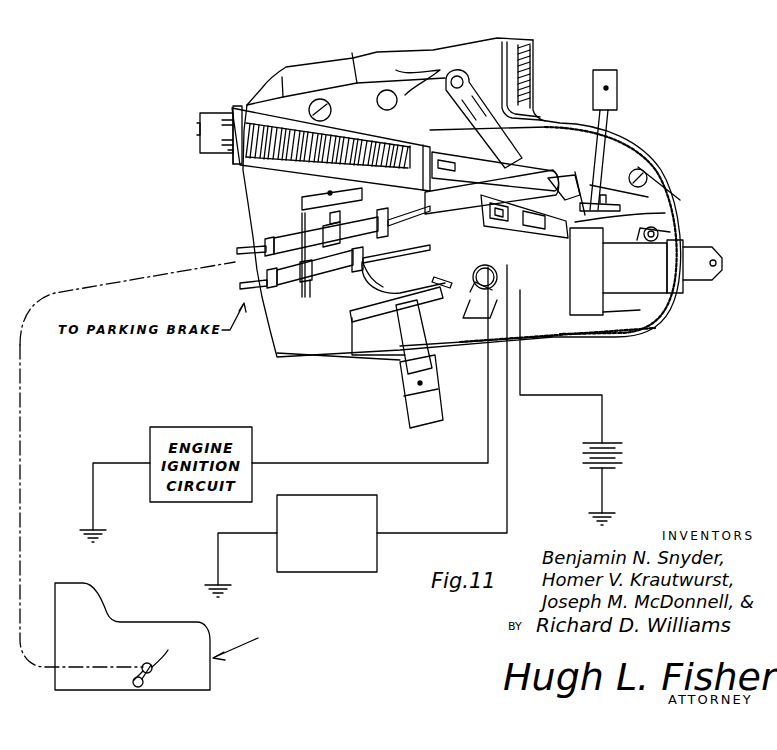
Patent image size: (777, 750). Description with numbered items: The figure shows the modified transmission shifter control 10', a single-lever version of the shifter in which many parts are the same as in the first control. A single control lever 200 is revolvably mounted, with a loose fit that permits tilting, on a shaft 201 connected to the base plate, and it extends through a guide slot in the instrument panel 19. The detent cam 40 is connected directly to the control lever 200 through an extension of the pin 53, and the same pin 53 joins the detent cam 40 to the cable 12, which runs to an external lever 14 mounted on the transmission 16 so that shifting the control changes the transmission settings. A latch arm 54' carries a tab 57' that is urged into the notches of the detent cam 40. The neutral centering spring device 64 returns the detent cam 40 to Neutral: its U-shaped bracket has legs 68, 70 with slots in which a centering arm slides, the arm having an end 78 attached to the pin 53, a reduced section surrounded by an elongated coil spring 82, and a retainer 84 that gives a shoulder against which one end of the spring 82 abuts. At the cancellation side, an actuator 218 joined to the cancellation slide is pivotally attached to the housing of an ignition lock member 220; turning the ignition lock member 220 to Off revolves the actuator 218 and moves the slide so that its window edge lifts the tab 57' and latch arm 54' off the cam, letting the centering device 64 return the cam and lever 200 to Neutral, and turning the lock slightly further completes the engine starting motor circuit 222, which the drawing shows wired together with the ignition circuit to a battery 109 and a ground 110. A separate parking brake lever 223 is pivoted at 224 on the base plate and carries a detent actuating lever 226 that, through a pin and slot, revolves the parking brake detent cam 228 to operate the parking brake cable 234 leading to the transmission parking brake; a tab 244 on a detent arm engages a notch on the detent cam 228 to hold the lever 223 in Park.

The retainer 84 is at (214, 116).
The neutral centering spring device 64 is at (243, 104).
The leg 68 is at (232, 160).
The coil spring 82 is at (340, 135).
The pivot 224 is at (387, 92).
The detent actuating lever 226 is at (472, 86).
The control 10' is at (611, 199).
The control lever 200 is at (617, 94).
The end 78 is at (526, 167).
The pin 53 is at (565, 166).
The detent cam 40 is at (577, 183).
The shaft 201 is at (596, 200).
The instrument panel 19 is at (685, 196).
The actuator 218 is at (675, 238).
The ignition lock member 220 is at (620, 297).
The tab 244 is at (548, 338).
The parking brake detent cam 228 is at (471, 313).
The latch arm 54' is at (464, 271).
The tab 57' is at (496, 204).
The leg 70 is at (425, 224).
The cable 12 is at (200, 256).
The parking brake cable 234 is at (240, 287).
The parking brake lever 223 is at (408, 390).
The engine starting motor circuit 222 is at (378, 513).
The battery 109 is at (625, 455).
The ground 110 is at (608, 514).
The external lever 14 is at (99, 516).
The transmission 16 is at (212, 668).